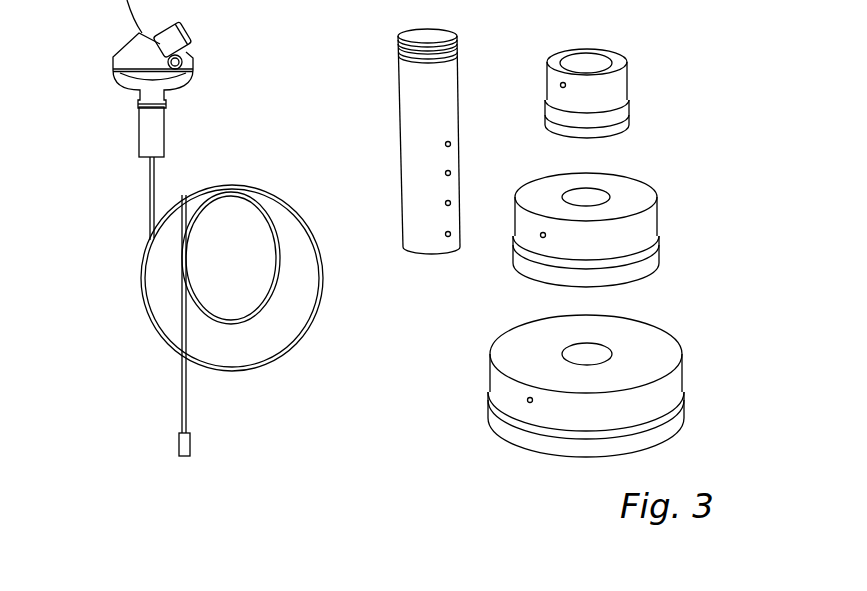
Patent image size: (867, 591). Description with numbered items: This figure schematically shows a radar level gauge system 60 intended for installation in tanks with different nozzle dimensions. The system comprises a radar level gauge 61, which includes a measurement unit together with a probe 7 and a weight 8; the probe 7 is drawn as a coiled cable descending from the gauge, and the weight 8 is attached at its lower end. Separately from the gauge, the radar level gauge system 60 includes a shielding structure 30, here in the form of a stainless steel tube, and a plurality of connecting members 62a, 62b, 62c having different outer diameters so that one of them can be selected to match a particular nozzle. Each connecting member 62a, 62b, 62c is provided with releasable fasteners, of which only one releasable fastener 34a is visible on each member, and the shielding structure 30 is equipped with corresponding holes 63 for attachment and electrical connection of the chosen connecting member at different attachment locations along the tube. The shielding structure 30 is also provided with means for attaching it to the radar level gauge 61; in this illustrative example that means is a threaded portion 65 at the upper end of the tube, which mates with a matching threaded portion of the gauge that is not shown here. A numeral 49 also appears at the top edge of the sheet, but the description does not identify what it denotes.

The radar level gauge 61 is at (132, 172).
The probe 7 is at (143, 300).
The weight 8 is at (191, 443).
The upper element (cut off) 49 is at (342, 6).
The radar level gauge system 60 is at (398, 455).
The shielding structure 30 is at (396, 154).
The threaded portion 65 is at (397, 33).
The holes 63 is at (450, 143).
The connecting member 62a is at (644, 87).
The connecting member 62b is at (697, 234).
The connecting member 62c is at (707, 398).
The releasable fastener 34a is at (561, 84).